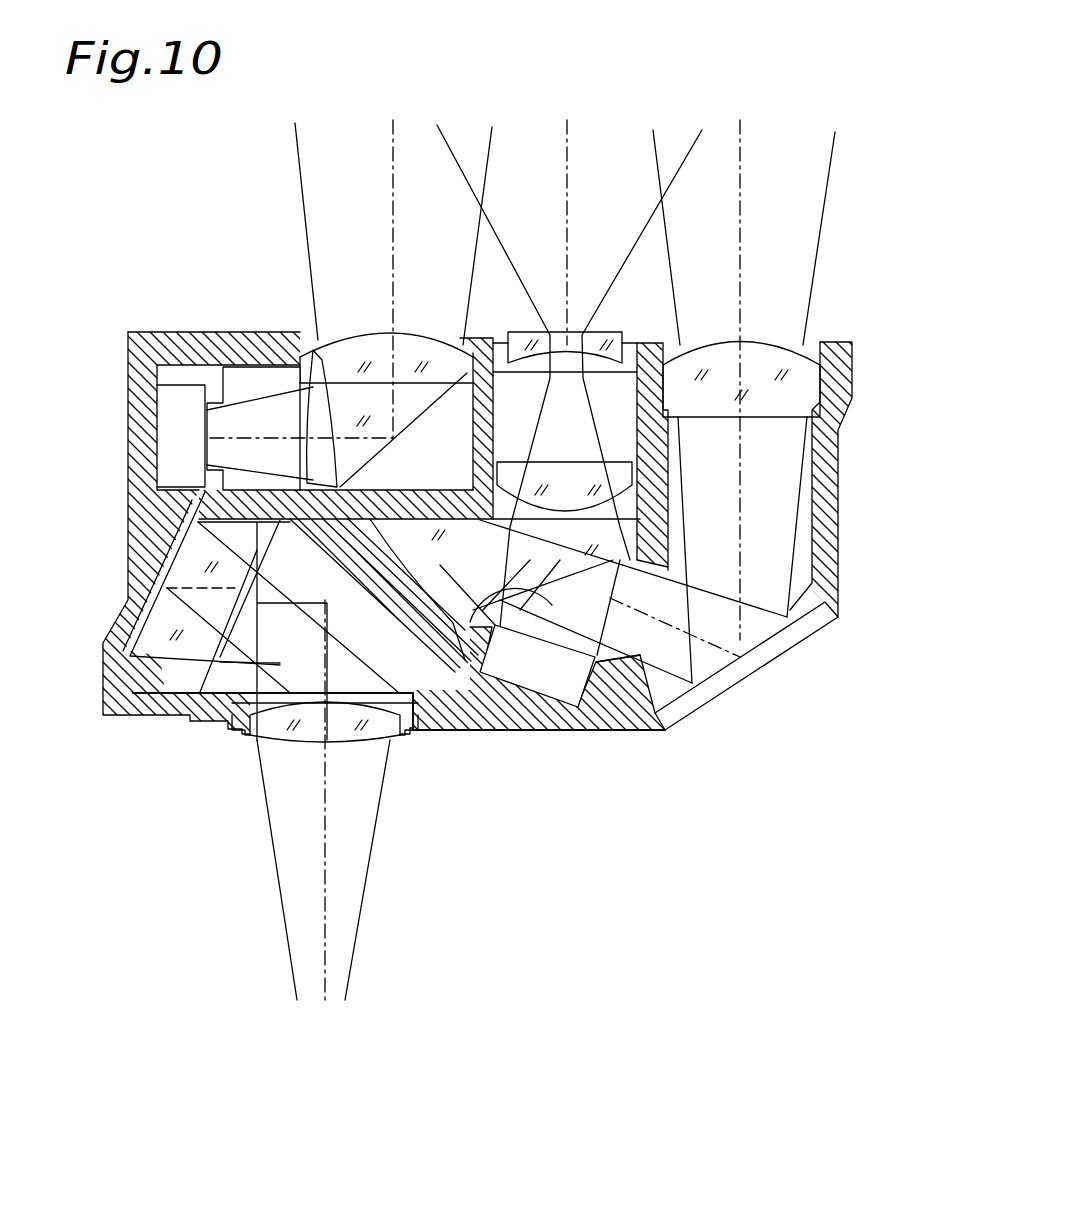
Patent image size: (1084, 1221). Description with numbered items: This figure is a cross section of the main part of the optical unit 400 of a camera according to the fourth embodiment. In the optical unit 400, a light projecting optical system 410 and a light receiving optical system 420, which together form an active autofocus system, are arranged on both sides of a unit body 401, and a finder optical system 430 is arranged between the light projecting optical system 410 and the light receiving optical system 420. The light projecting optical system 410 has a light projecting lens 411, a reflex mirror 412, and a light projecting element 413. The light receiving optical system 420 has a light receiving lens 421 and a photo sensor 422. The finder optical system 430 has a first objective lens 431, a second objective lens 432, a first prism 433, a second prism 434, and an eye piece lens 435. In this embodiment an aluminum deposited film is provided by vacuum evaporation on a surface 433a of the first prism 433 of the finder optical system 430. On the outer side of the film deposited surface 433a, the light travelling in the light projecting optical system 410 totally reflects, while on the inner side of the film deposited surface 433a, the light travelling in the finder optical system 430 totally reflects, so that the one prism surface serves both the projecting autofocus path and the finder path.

The optical unit 400 is at (697, 788).
The unit body 401 is at (547, 713).
The light projecting optical system 410 is at (890, 758).
The light projecting lens 411 is at (810, 395).
The reflex mirror 412 is at (803, 627).
The light projecting element 413 is at (637, 733).
The light receiving optical system 420 is at (237, 253).
The light receiving lens 421 is at (260, 378).
The photo sensor 422 is at (173, 400).
The finder optical system 430 is at (607, 242).
The first objective lens 431 is at (552, 340).
The second objective lens 432 is at (500, 338).
The first prism 433 is at (455, 607).
The film deposited surface 433a is at (470, 627).
The second prism 434 is at (183, 668).
The eye piece lens 435 is at (288, 737).